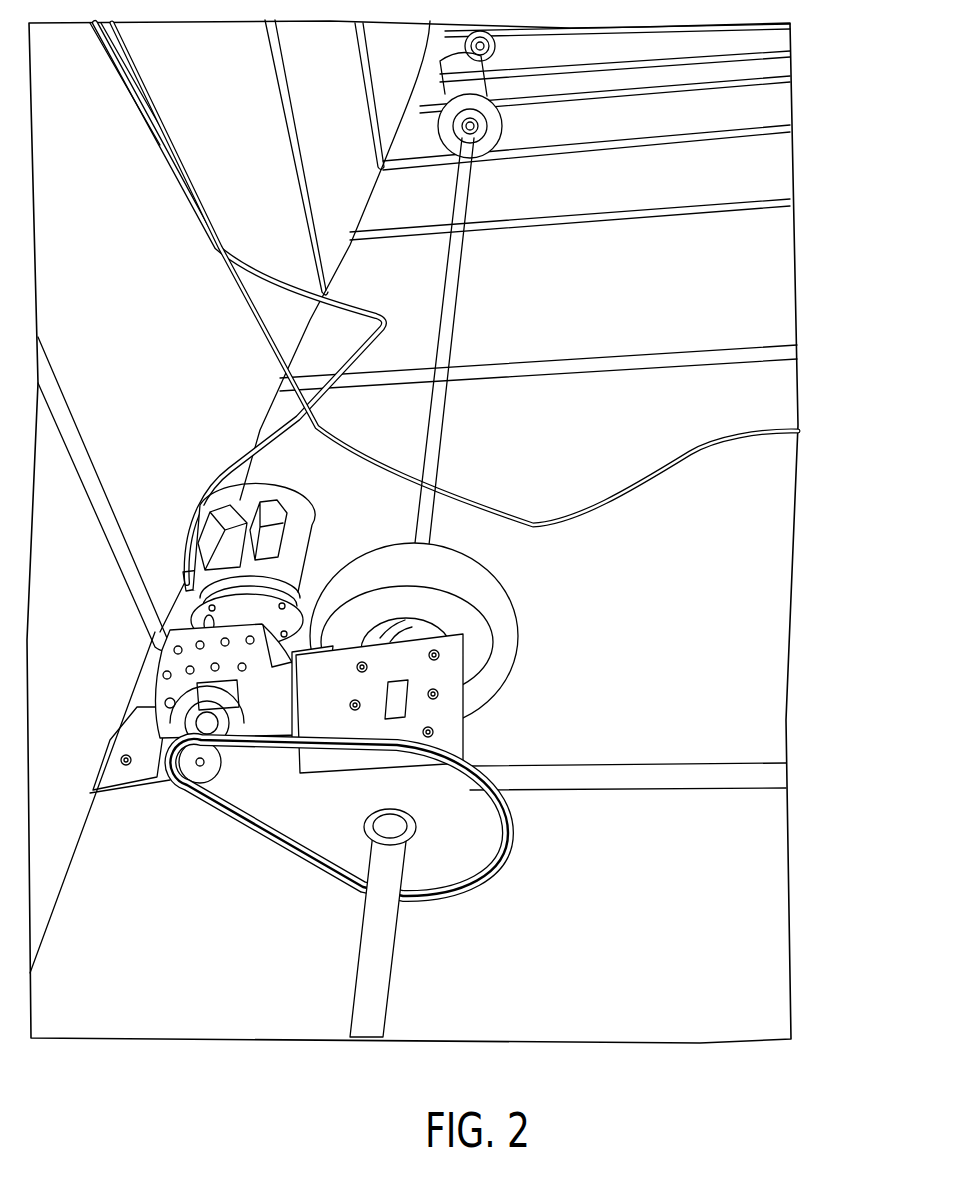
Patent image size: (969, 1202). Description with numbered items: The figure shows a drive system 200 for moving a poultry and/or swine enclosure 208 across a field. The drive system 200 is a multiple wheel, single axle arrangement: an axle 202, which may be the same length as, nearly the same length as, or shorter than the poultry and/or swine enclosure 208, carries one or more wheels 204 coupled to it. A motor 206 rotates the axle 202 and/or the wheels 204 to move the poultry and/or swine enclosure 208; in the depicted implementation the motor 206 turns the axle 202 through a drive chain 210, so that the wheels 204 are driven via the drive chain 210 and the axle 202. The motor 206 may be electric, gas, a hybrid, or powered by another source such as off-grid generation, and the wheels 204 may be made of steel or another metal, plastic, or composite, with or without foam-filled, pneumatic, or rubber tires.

The drive system 200 is at (836, 515).
The axle 202 is at (438, 460).
The wheels 204 is at (503, 132).
The motor 206 is at (253, 690).
The poultry and/or swine enclosure 208 is at (330, 218).
The drive chain 210 is at (400, 741).